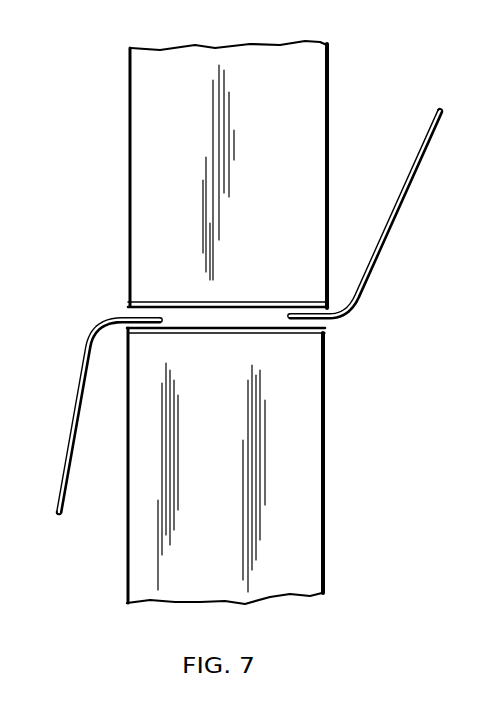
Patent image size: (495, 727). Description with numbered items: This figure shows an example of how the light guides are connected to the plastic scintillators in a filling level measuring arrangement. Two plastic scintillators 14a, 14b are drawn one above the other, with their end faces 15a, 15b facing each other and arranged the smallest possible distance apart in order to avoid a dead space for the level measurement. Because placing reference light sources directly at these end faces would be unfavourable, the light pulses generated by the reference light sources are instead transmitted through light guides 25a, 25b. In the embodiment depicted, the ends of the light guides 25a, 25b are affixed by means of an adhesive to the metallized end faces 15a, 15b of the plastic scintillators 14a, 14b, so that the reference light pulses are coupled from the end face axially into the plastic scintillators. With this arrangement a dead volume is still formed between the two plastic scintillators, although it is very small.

The plastic scintillator 14a is at (135, 145).
The end face 15a is at (170, 303).
The light guide 25a is at (395, 213).
The plastic scintillator 14b is at (312, 473).
The end face 15b is at (273, 334).
The light guide 25b is at (70, 400).